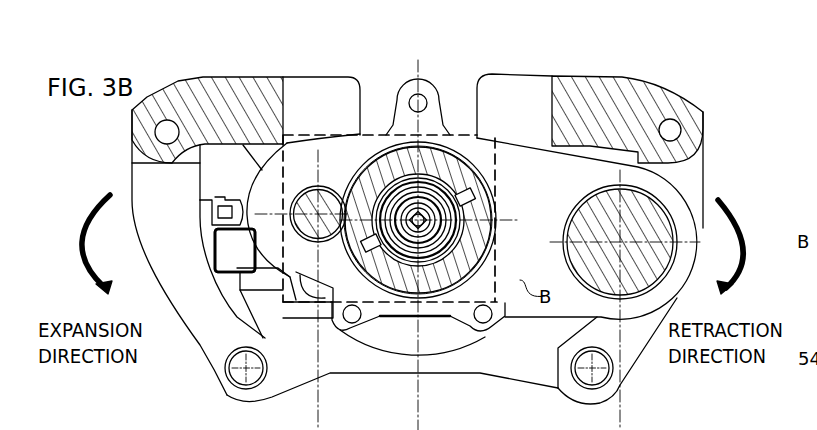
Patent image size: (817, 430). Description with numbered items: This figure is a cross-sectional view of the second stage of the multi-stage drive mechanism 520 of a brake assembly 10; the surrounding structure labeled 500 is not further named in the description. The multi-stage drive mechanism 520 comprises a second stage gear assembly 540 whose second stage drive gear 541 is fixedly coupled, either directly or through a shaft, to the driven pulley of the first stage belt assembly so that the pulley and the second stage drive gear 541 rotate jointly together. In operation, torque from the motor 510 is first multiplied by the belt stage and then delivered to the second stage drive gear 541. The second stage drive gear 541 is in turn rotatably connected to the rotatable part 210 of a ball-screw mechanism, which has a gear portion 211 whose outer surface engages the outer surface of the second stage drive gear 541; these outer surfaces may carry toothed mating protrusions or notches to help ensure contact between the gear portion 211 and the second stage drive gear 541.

The brake caliper assembly 10 is at (88, 164).
The rotatable part 210 is at (427, 153).
The gear portion 211 is at (453, 285).
The caliper body 500 is at (677, 192).
The motor 510 is at (602, 277).
The multi-stage drive mechanism 520 is at (235, 250).
The second stage gear assembly 540 is at (330, 252).
The second stage drive gear 541 is at (313, 187).